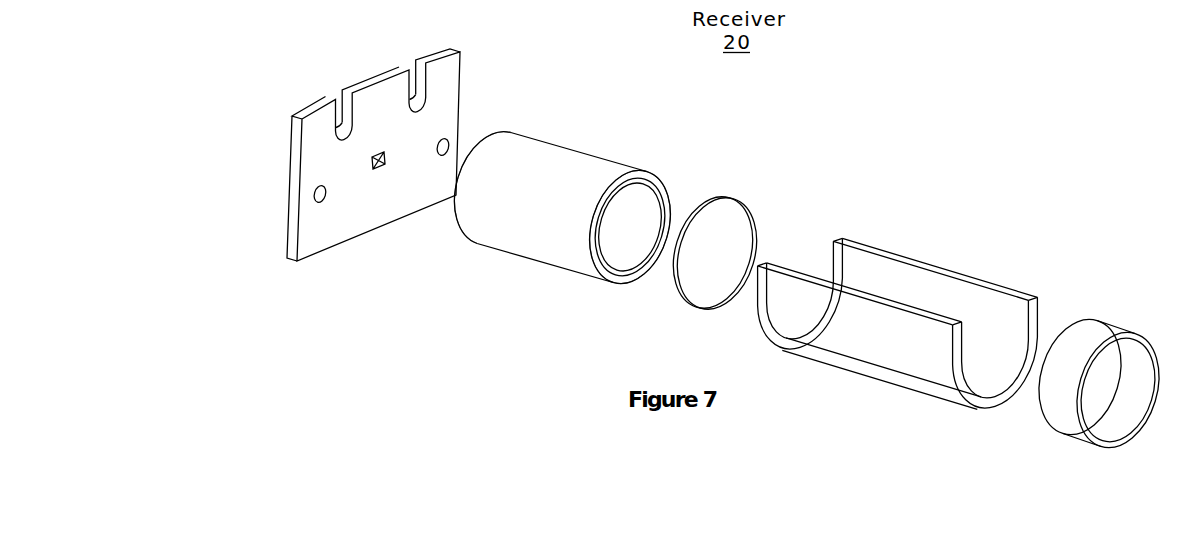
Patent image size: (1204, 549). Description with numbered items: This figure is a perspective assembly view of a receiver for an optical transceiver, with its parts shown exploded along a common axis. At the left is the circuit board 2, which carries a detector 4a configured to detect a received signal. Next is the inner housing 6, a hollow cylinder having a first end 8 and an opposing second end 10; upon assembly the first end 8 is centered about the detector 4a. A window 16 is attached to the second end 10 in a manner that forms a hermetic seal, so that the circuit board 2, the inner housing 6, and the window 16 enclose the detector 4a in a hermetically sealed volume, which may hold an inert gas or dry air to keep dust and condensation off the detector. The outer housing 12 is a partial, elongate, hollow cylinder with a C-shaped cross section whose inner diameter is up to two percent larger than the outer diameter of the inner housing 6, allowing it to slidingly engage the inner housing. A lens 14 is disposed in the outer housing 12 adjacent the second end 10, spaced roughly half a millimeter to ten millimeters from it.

The circuit board 2 is at (373, 83).
The detector 4a is at (373, 158).
The inner housing 6 is at (553, 233).
The first end 8 is at (507, 136).
The second end 10 is at (664, 152).
The window 16 is at (725, 207).
The outer housing 12 is at (920, 262).
The lens 14 is at (1118, 327).